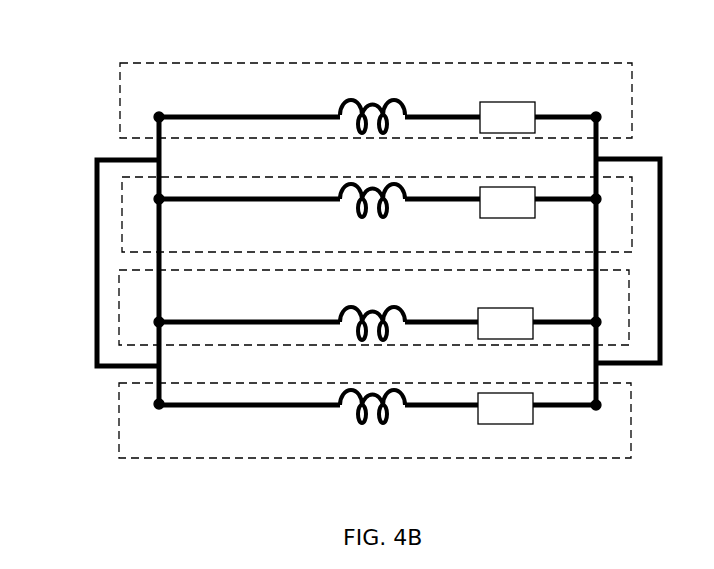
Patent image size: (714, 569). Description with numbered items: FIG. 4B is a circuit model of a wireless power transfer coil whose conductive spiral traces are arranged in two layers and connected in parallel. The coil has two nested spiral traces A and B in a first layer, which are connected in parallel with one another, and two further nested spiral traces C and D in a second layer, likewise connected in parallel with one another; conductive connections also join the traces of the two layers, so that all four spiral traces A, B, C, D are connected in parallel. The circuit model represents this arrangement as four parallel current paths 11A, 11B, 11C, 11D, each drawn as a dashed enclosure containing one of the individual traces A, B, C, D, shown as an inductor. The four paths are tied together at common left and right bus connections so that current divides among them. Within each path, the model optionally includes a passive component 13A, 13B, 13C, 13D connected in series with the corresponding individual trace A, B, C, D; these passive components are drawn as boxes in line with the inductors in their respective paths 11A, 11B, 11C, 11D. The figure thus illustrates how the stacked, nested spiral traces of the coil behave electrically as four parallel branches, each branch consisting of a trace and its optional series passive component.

The parallel current path 11A is at (140, 63).
The parallel current path 11B is at (120, 209).
The parallel current path 11C is at (120, 305).
The parallel current path 11D is at (140, 458).
The passive component 13A is at (507, 117).
The passive component 13B is at (507, 202).
The passive component 13C is at (505, 323).
The passive component 13D is at (505, 408).
The nested spiral trace A is at (340, 106).
The nested spiral trace B is at (358, 212).
The nested spiral trace C is at (340, 312).
The nested spiral trace D is at (357, 417).